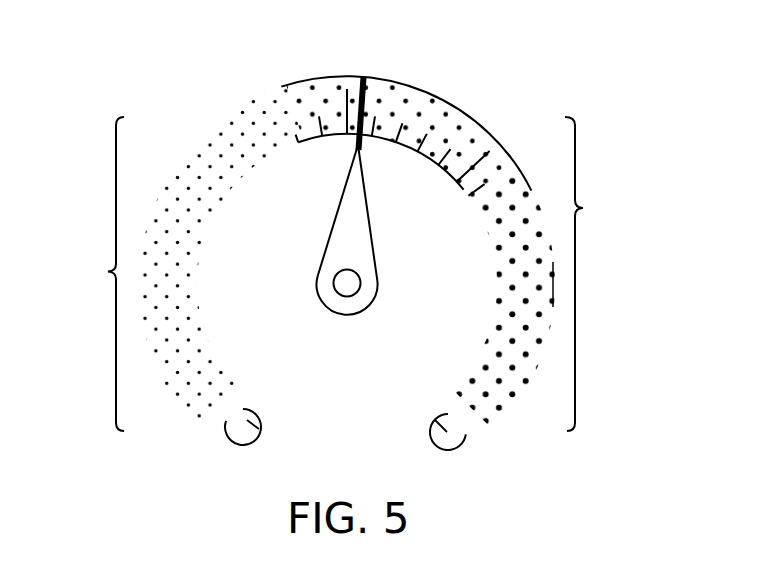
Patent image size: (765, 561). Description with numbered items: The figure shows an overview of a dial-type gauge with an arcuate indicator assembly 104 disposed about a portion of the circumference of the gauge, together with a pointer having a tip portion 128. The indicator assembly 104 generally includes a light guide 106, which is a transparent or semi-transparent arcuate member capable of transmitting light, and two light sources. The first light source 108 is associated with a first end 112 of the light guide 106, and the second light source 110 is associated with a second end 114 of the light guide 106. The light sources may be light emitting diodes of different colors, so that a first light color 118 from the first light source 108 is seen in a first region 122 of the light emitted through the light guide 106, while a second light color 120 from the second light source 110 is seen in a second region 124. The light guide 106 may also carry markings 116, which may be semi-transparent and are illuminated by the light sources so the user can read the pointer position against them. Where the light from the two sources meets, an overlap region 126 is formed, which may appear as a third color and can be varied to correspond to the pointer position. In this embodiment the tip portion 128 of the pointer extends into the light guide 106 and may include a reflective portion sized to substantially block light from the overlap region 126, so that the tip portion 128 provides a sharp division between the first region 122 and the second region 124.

The arcuate indicator assembly 104 is at (354, 260).
The light guide 106 is at (160, 98).
The first light source 108 is at (240, 447).
The second light source 110 is at (458, 445).
The first end 112 is at (152, 444).
The second end 114 is at (528, 443).
The markings 116 is at (556, 292).
The first light color 118 is at (259, 429).
The second light color 120 is at (435, 420).
The first region 122 is at (95, 274).
The second region 124 is at (595, 274).
The overlap region 126 is at (398, 75).
The tip portion 128 is at (362, 98).